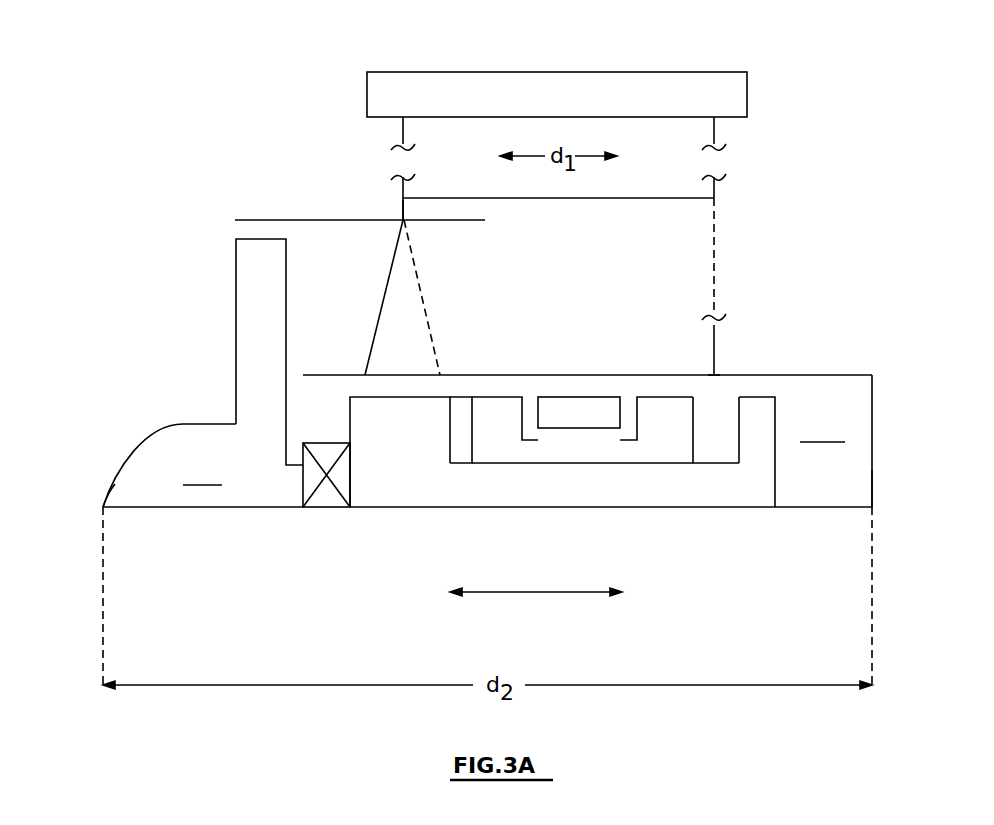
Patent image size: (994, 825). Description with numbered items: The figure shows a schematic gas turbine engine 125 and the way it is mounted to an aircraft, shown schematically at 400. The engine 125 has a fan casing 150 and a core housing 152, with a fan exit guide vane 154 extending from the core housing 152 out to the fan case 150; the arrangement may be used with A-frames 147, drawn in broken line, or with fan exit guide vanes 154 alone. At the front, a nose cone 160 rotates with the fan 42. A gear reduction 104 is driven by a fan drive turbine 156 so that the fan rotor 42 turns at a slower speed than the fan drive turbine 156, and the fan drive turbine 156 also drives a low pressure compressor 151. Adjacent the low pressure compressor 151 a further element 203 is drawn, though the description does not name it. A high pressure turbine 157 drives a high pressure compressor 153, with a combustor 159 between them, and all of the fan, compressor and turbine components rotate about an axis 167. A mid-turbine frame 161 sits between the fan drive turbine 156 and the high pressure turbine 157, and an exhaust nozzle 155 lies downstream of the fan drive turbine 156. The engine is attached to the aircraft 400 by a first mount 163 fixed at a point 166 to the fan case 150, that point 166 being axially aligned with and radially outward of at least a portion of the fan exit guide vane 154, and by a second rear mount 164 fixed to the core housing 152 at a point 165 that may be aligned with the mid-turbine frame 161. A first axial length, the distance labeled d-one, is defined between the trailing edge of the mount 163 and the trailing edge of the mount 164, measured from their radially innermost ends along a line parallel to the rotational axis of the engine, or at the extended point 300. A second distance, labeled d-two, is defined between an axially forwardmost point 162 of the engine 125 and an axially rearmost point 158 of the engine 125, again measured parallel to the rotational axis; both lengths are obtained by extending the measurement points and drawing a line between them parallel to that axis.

The engine 125 is at (190, 153).
The aircraft 400 is at (580, 92).
The extended point 300 is at (714, 198).
The first mount 163 is at (403, 205).
The point 166 is at (403, 218).
The fan casing 150 is at (307, 220).
The fan exit guide vane 154 is at (372, 338).
The A-frames 147 is at (432, 328).
The core housing 152 is at (552, 375).
The second rear mount 164 is at (715, 340).
The point 165 is at (715, 375).
The fan 42 is at (253, 338).
The nose cone 160 is at (203, 465).
The axially forwardmost point 162 is at (103, 507).
The gear reduction 104 is at (331, 497).
The low pressure compressor 151 is at (405, 440).
The slot 203 is at (459, 452).
The high pressure compressor 153 is at (503, 438).
The combustor 159 is at (578, 413).
The high pressure turbine 157 is at (662, 425).
The mid-turbine frame 161 is at (715, 430).
The fan drive turbine 156 is at (760, 453).
The exhaust nozzle 155 is at (823, 441).
The axially rearmost point 158 is at (872, 483).
The axis 167 is at (545, 592).